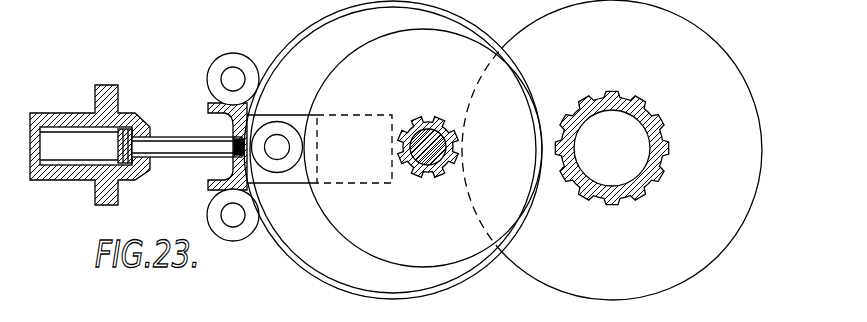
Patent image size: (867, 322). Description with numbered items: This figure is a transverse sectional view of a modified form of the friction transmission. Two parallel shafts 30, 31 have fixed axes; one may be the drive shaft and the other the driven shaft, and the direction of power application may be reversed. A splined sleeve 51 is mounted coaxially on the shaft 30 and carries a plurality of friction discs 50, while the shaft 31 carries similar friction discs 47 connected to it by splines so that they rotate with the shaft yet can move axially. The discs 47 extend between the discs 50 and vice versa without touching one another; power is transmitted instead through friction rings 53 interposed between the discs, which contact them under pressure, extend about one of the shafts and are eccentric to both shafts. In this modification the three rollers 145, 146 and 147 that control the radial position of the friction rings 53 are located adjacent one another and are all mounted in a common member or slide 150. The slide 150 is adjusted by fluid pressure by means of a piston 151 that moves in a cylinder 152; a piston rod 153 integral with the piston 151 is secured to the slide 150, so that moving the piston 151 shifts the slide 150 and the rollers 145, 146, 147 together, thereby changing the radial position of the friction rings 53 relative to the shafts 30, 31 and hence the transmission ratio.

The shaft 30 is at (428, 170).
The shaft 31 is at (654, 136).
The friction disc 47 is at (707, 252).
The friction disc 50 is at (372, 235).
The splined sleeve 51 is at (423, 122).
The friction ring 53 is at (363, 290).
The roller 145 is at (275, 128).
The roller 146 is at (224, 62).
The roller 147 is at (232, 234).
The slide 150 is at (299, 185).
The piston 151 is at (132, 124).
The cylinder 152 is at (72, 119).
The piston rod 153 is at (180, 145).